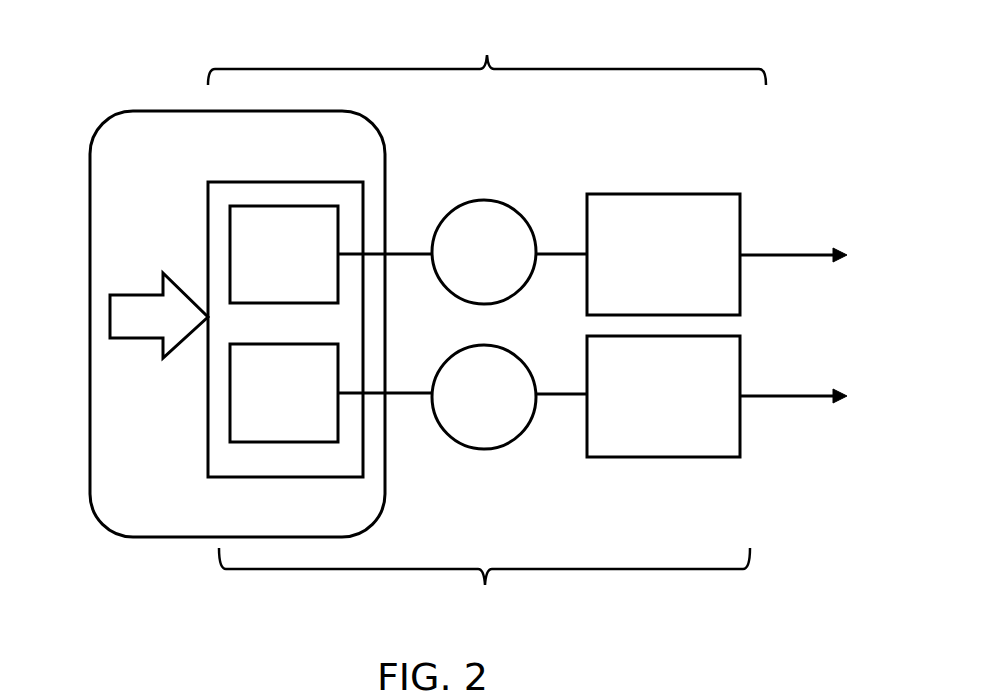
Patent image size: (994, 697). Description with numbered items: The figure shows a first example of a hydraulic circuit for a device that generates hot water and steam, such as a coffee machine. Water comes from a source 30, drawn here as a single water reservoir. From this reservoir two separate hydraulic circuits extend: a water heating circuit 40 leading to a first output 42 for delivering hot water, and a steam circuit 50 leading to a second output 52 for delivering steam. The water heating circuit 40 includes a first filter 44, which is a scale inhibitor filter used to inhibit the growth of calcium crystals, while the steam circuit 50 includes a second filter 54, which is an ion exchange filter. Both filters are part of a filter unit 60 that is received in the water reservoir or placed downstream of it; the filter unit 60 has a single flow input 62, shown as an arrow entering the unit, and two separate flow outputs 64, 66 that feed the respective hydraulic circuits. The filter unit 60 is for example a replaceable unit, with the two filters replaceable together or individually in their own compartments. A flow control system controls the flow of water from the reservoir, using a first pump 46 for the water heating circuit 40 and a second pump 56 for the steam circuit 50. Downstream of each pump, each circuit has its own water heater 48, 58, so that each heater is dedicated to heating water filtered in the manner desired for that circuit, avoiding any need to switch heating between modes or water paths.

The source of water 30 is at (109, 117).
The water heating circuit 40 is at (487, 49).
The first output 42 is at (800, 250).
The first filter 44 is at (253, 206).
The first pump 46 is at (457, 205).
The water heater 48 is at (588, 242).
The steam circuit 50 is at (484, 580).
The second output 52 is at (792, 393).
The second filter 54 is at (230, 410).
The second pump 56 is at (435, 417).
The water heater 58 is at (588, 375).
The filter unit 60 is at (208, 221).
The single flow input 62 is at (152, 336).
The flow output 64 is at (372, 250).
The flow output 66 is at (373, 397).